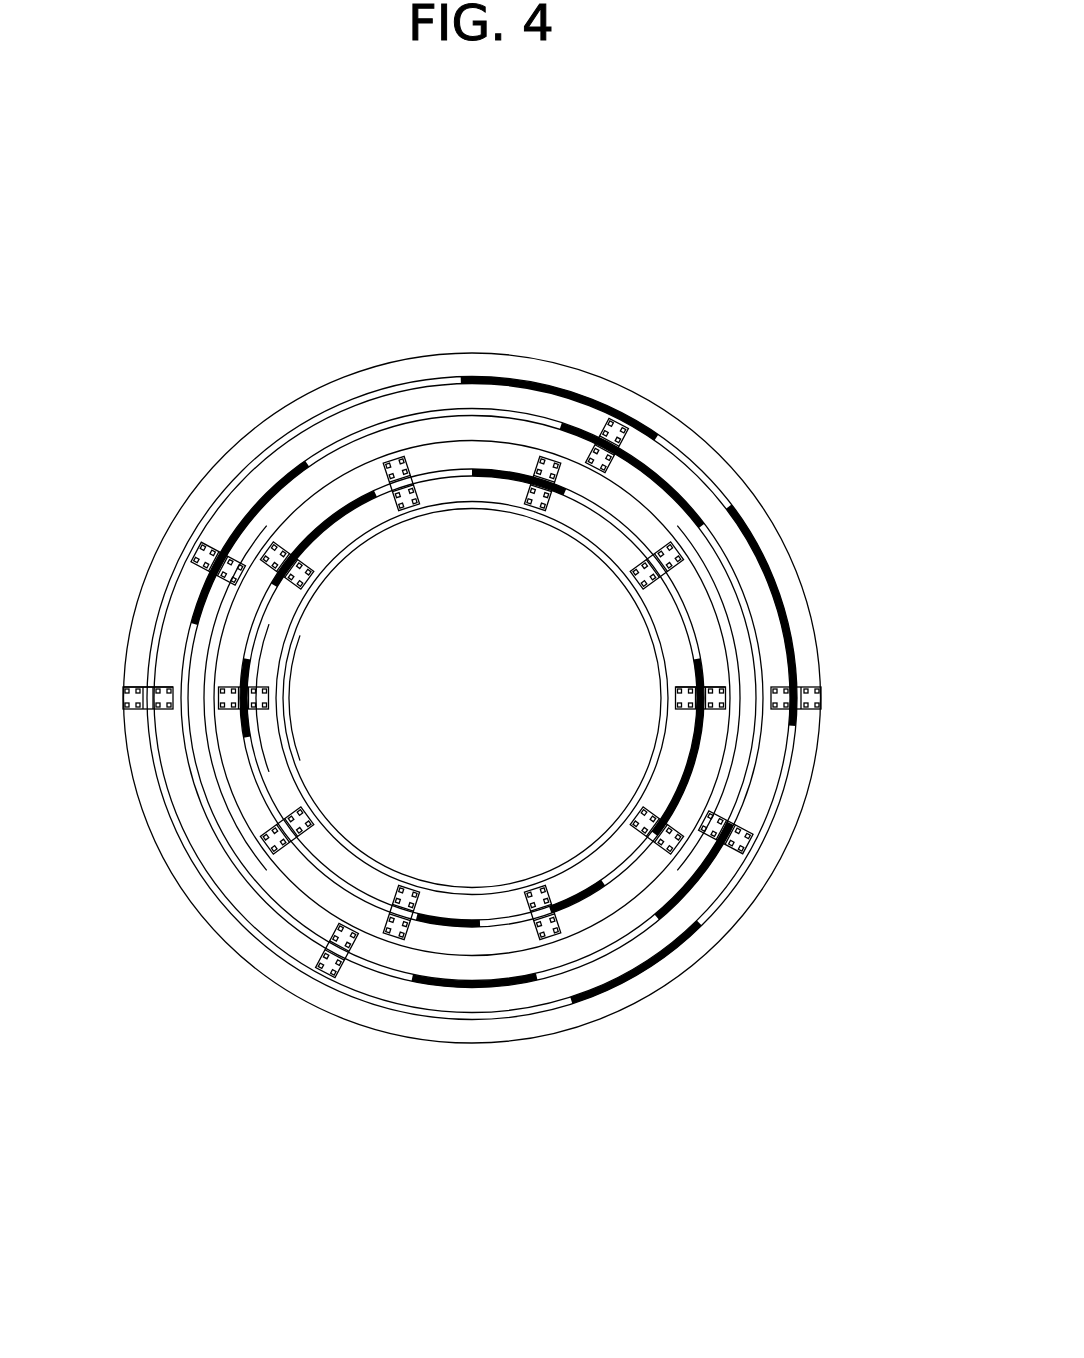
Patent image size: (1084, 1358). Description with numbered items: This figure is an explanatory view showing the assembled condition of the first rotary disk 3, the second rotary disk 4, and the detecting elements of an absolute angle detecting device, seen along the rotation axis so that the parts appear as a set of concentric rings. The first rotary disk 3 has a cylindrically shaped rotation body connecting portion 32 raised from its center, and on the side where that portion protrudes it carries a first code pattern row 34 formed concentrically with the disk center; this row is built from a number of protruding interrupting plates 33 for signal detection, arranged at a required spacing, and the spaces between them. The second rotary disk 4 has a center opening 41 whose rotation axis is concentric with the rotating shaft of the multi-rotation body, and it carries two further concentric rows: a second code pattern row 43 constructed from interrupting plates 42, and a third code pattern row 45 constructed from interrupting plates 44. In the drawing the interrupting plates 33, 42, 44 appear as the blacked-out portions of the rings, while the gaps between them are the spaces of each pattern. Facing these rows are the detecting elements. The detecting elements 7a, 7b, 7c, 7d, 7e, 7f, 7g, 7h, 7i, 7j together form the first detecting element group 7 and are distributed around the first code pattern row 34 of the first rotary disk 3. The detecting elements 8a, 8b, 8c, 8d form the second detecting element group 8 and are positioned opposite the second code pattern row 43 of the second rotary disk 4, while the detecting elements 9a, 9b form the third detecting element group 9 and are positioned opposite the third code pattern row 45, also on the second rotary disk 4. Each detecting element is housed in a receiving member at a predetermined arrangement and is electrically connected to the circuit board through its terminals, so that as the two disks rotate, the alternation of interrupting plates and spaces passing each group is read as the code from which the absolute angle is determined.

The first rotary disk 3 is at (476, 446).
The second rotary disk 4 is at (748, 458).
The first detecting element group 7 is at (590, 640).
The detecting element 7a is at (547, 509).
The detecting element 7b is at (633, 585).
The detecting element 7c is at (675, 693).
The detecting element 7d is at (635, 815).
The detecting element 7e is at (536, 888).
The detecting element 7f is at (409, 890).
The detecting element 7g is at (309, 818).
The detecting element 7h is at (254, 686).
The detecting element 7i is at (294, 582).
The detecting element 7j is at (406, 508).
The second detecting element group 8 is at (727, 202).
The detecting element 8a is at (609, 420).
The detecting element 8b is at (705, 686).
The detecting element 8c is at (148, 686).
The detecting element 8d is at (240, 686).
The third detecting element group 9 is at (637, 1256).
The detecting element 9a is at (808, 710).
The detecting element 9b is at (123, 710).
The rotation body connecting portion 32 is at (470, 885).
The interrupting plate 33 is at (553, 388).
The first code pattern row 34 is at (665, 443).
The center opening 41 is at (338, 408).
The interrupting plate 42 is at (772, 668).
The second code pattern row 43 is at (763, 630).
The interrupting plate 44 is at (680, 946).
The third code pattern row 45 is at (521, 1020).